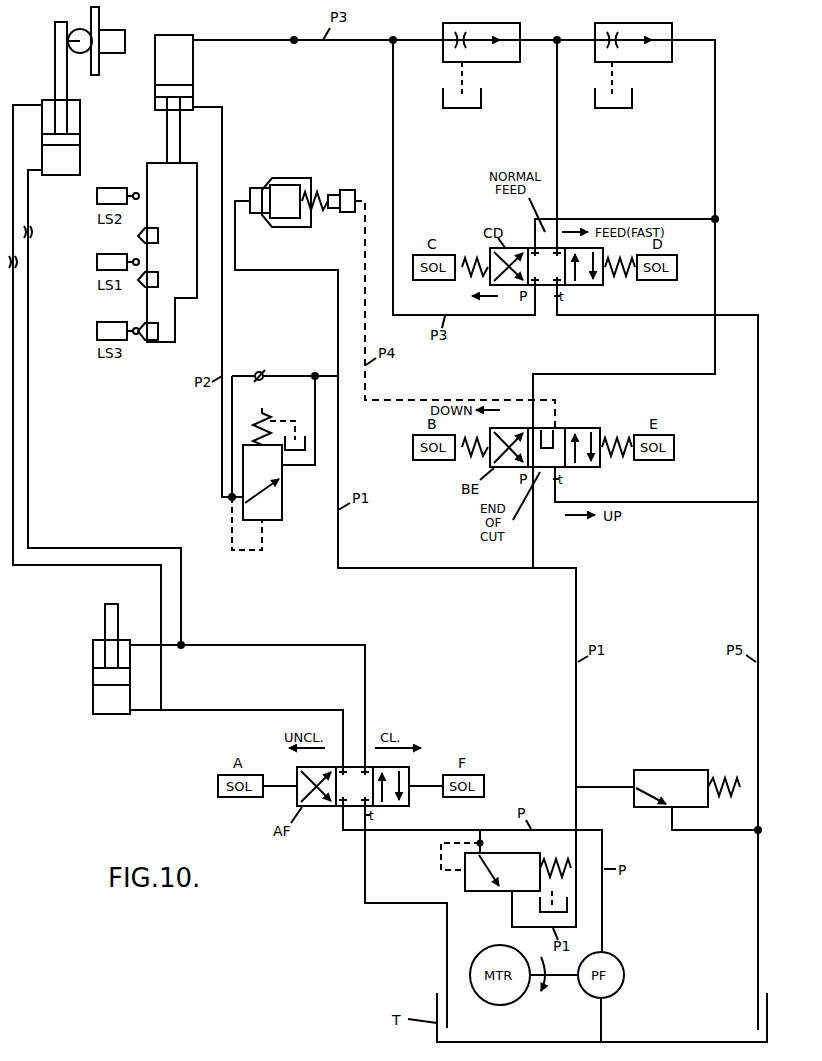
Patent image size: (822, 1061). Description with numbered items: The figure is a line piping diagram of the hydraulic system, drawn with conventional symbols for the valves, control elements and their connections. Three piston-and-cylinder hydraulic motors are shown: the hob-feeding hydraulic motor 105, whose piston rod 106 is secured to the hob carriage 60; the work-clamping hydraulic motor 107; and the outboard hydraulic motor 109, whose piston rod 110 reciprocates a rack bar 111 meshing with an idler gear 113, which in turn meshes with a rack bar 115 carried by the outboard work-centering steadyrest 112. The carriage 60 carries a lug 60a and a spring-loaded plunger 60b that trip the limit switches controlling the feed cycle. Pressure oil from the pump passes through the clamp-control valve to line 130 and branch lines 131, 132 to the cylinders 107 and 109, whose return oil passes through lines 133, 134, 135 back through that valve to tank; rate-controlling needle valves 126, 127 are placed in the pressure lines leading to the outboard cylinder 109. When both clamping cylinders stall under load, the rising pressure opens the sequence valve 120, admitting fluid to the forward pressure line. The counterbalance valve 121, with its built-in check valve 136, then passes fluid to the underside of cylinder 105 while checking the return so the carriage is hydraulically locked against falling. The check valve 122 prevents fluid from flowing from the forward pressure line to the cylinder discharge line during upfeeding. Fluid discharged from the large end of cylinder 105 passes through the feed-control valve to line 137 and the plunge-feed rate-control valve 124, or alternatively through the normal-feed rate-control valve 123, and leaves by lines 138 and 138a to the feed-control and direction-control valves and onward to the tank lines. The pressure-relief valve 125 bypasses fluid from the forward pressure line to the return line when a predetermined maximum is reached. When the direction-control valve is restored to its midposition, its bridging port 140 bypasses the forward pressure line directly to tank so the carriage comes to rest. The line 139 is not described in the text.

The hob carriage 60 is at (172, 252).
The lug 60a is at (158, 238).
The spring-loaded plunger 60b is at (158, 282).
The hydraulic motor 105 is at (191, 74).
The piston rod 106 is at (180, 136).
The work-clamping hydraulic motor 107 is at (93, 667).
The hydraulic motor 109 is at (75, 113).
The piston rod 110 is at (55, 84).
The rack bar 111 is at (72, 43).
The outboard work-centering steadyrest 112 is at (118, 33).
The idler gear 113 is at (70, 39).
The rack bar 115 is at (99, 19).
The sequence valve 120 is at (508, 878).
The counterbalance valve 121 is at (282, 497).
The check valve 122 is at (405, 504).
The rate-control valve 123 is at (497, 62).
The rate-control valve 124 is at (652, 62).
The pressure-relief valve 125 is at (668, 773).
The rate-controlling needle valve 126 is at (36, 238).
The rate-controlling needle valve 127 is at (20, 264).
The line 130 is at (258, 645).
The branch line 131 is at (141, 640).
The branch line 132 is at (28, 489).
The line 133 is at (13, 466).
The line 134 is at (142, 712).
The line 135 is at (237, 710).
The check valve 136 is at (270, 363).
The line 137 is at (559, 164).
The line 138 is at (717, 103).
The line 138a is at (624, 219).
The hydraulic line 139 is at (538, 40).
The bridging port 140 is at (543, 431).